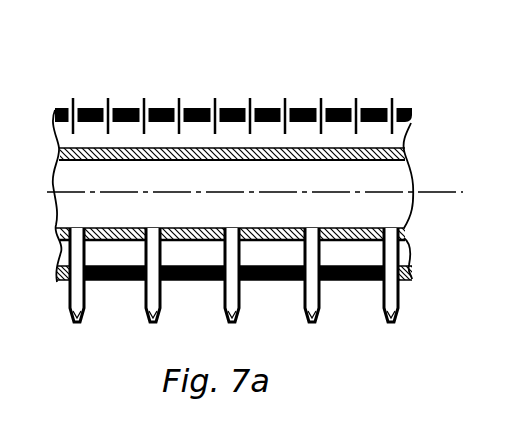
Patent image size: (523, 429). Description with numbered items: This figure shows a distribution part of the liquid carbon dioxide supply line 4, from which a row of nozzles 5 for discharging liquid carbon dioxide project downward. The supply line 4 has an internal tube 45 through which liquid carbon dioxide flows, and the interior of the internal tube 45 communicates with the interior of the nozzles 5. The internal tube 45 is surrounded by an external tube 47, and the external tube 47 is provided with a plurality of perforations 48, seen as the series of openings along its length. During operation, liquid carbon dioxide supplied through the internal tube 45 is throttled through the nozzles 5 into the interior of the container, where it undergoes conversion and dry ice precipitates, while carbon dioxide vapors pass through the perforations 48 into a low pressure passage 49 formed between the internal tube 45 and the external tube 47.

The liquid carbon dioxide supply line 4 is at (392, 181).
The nozzles 5 is at (398, 298).
The internal tube 45 is at (407, 150).
The external tube 47 is at (143, 105).
The perforations 48 is at (108, 107).
The low pressure passage 49 is at (285, 107).